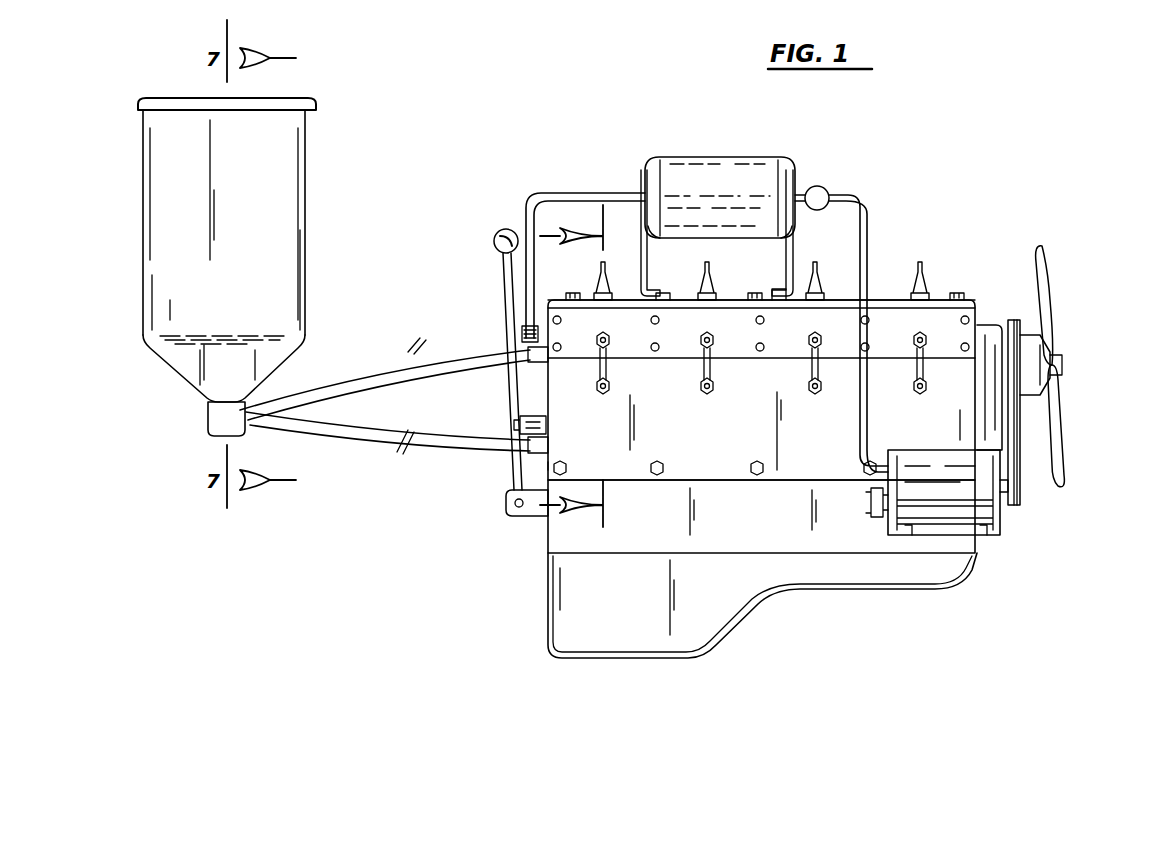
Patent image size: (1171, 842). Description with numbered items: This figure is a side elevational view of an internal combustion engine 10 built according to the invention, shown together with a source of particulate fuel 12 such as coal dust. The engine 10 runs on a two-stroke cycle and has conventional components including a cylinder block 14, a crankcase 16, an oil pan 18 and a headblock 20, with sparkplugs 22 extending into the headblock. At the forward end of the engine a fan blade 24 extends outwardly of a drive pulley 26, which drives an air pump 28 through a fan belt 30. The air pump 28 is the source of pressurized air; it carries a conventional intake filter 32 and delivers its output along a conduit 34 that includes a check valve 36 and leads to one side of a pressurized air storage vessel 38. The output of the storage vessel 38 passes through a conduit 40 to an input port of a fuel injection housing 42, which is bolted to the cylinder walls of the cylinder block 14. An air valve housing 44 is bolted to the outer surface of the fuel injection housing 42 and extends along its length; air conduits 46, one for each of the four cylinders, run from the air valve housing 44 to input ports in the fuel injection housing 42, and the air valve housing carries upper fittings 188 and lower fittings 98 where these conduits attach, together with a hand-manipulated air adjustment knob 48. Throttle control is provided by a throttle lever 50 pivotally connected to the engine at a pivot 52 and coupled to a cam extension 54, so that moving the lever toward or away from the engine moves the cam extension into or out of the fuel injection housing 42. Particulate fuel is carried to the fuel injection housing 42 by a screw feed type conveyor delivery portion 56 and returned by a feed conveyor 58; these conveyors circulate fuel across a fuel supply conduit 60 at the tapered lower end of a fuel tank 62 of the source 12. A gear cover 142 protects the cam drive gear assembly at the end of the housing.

The internal combustion engine 10 is at (982, 168).
The source of particulate fuel 12 is at (386, 80).
The cylinder block 14 is at (537, 470).
The crankcase 16 is at (560, 530).
The oil pan 18 is at (898, 585).
The headblock 20 is at (942, 298).
The sparkplugs 22 is at (600, 268).
The fan 24 is at (1052, 262).
The drive pulley 26 is at (1030, 335).
The air pump 28 is at (1000, 510).
The fan belt 30 is at (1014, 438).
The intake filter 32 is at (870, 502).
The conduit 34 is at (868, 238).
The check valve 36 is at (828, 188).
The pressurized air storage vessel 38 is at (725, 175).
The conduit 40 is at (598, 190).
The fuel injection housing 42 is at (724, 451).
The air valve housing 44 is at (642, 336).
The air conduits 46 is at (599, 366).
The air adjustment knob 48 is at (524, 338).
The throttle lever 50 is at (503, 290).
The pivot 52 is at (514, 503).
The cam extension 54 is at (526, 420).
The screw feed type conveyor delivery portion 56 is at (360, 378).
The feed conveyor 58 is at (345, 436).
The fuel supply conduit 60 is at (207, 426).
The fuel tank 62 is at (307, 257).
The lower nut 98 is at (598, 390).
The gear cover 142 is at (986, 325).
The upper nut 188 is at (596, 340).